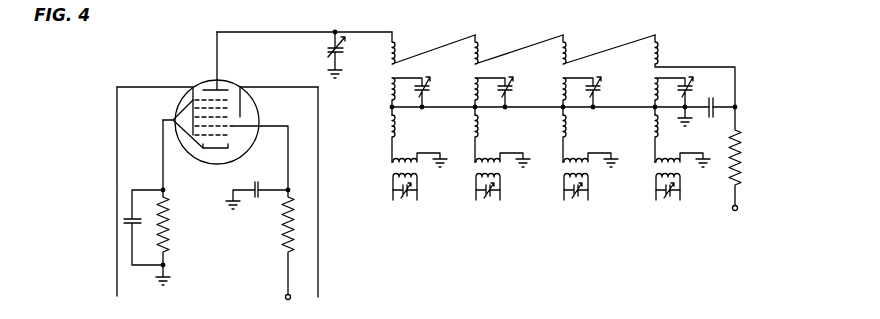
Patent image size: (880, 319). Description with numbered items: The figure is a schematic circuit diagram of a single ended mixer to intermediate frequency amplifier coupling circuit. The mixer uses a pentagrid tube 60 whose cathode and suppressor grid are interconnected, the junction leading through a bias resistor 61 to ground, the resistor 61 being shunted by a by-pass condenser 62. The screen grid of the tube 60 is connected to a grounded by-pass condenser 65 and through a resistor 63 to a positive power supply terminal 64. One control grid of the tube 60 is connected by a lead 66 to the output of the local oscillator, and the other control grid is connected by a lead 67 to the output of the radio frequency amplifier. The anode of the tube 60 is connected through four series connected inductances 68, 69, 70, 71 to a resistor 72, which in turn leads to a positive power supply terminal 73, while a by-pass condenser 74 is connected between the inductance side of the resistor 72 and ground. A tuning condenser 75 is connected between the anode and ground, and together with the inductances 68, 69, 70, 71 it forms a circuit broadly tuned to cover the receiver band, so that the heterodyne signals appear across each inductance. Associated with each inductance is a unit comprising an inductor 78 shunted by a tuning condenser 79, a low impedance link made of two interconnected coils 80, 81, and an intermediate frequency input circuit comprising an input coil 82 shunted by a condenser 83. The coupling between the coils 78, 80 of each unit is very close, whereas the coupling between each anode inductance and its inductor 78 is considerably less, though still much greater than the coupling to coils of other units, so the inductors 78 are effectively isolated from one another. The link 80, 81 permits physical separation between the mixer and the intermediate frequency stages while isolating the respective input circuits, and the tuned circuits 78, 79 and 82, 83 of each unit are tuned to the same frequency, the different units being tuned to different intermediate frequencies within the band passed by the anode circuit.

The pentagrid tube 60 is at (208, 83).
The bias resistor 61 is at (175, 250).
The by-pass condenser 62 is at (124, 221).
The resistor 63 is at (282, 255).
The positive power supply terminal 64 is at (285, 297).
The by-pass condenser 65 is at (257, 199).
The lead 66 is at (167, 87).
The lead 67 is at (284, 87).
The inductance 68 is at (394, 53).
The inductance 69 is at (479, 53).
The inductance 70 is at (567, 53).
The inductance 71 is at (659, 53).
The resistor 72 is at (744, 175).
The positive power supply terminal 73 is at (738, 209).
The by-pass condenser 74 is at (713, 119).
The tuning condenser 75 is at (328, 48).
The inductor 78 is at (388, 92).
The tuning condenser 79 is at (428, 82).
The coil 80 is at (388, 126).
The coil 81 is at (406, 156).
The input coil 82 is at (392, 178).
The condenser 83 is at (406, 199).